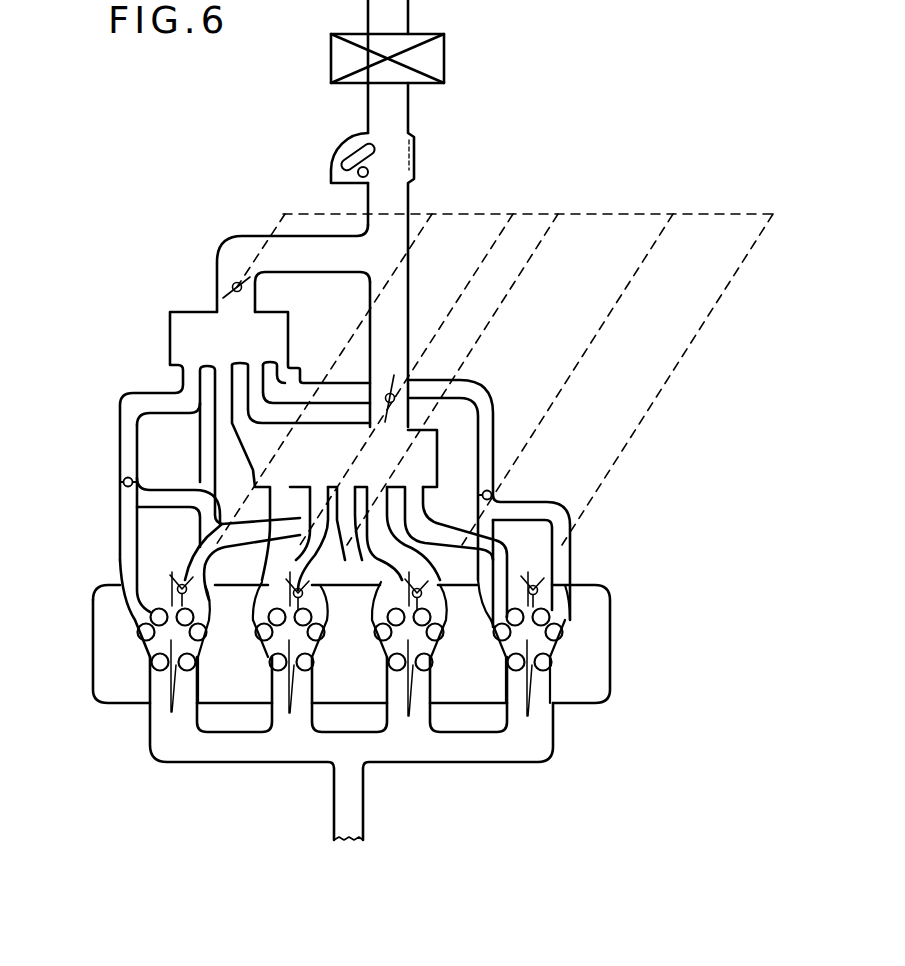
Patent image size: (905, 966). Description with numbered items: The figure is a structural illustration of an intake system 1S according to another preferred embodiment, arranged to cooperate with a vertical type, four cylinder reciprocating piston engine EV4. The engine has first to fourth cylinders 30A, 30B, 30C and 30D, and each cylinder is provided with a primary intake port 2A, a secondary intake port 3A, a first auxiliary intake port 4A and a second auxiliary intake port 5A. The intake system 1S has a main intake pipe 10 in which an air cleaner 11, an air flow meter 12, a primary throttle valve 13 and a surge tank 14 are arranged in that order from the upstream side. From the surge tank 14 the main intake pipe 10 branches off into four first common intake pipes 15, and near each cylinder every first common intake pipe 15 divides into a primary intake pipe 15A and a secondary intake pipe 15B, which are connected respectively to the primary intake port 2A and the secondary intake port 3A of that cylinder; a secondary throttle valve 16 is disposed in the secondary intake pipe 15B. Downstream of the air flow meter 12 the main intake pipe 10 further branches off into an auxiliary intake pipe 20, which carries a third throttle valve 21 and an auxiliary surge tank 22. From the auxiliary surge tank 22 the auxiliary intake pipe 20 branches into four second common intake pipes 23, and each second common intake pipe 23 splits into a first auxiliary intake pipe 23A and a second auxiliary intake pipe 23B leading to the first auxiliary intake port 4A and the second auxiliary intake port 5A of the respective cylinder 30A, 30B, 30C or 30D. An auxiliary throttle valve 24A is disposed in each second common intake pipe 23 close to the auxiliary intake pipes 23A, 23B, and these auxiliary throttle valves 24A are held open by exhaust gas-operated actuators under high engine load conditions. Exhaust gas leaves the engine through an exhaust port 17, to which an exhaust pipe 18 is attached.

The main intake pipe 10 is at (422, 190).
The air cleaner 11 is at (444, 60).
The air flow meter 12 is at (358, 146).
The auxiliary intake pipe 20 is at (300, 234).
The third throttle valve 21 is at (232, 293).
The auxiliary surge tank 22 is at (170, 325).
The intake system 1S is at (125, 361).
The primary throttle valve 13 is at (391, 385).
The surge tank 14 is at (440, 462).
The auxiliary throttle valve 24A is at (124, 481).
The second common intake pipe 23 is at (122, 400).
The second auxiliary intake pipe 23B is at (168, 415).
The first auxiliary intake pipe 23A is at (120, 512).
The first common intake pipe 15 is at (241, 518).
The secondary throttle valve 16 is at (182, 583).
The primary intake pipe 15A is at (175, 582).
The V-4 engine EV4 is at (622, 635).
The first cylinder 30A is at (124, 664).
The primary intake port 2A is at (150, 612).
The first auxiliary intake port 4A is at (138, 627).
The secondary intake pipe 15B is at (197, 607).
The second auxiliary intake port 5A is at (229, 683).
The secondary intake port 3A is at (152, 695).
The exhaust port 17 is at (292, 690).
The second cylinder 30B is at (322, 650).
The third cylinder 30C is at (445, 652).
The fourth cylinder 30D is at (555, 688).
The exhaust pipe 18 is at (266, 765).